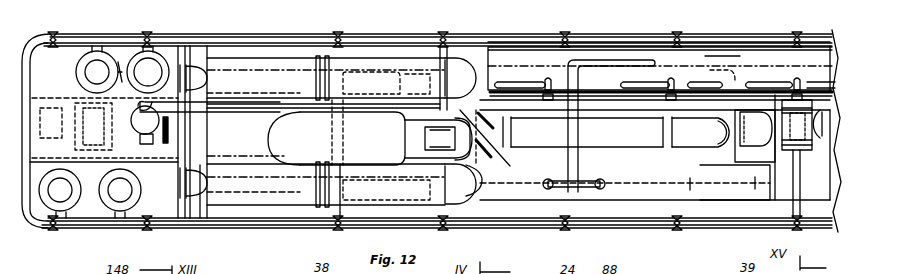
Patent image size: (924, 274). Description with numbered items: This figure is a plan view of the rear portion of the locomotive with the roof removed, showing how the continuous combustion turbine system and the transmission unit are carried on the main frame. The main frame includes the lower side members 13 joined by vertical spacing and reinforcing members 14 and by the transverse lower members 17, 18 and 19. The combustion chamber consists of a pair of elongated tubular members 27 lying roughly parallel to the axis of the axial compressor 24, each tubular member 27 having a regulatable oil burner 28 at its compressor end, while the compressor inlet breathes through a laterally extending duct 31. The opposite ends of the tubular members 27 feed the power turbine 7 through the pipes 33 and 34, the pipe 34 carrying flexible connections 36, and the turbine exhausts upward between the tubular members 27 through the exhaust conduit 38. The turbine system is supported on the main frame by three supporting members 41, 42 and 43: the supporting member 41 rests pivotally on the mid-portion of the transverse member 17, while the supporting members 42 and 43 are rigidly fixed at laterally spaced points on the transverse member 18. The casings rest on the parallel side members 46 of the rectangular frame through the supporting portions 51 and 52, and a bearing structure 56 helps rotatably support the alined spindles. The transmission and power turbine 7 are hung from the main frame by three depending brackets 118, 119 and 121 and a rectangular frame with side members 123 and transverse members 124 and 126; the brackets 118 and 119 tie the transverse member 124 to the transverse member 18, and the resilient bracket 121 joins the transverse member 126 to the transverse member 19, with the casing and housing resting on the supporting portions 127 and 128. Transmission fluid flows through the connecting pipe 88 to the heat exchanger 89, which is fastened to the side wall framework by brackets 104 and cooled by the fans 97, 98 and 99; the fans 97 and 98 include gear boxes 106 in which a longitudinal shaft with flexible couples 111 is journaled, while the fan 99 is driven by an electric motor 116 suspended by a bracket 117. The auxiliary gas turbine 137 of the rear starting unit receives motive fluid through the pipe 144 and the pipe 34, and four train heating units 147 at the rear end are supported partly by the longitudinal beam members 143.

The power turbine 7 is at (694, 165).
The lower side member 13 is at (412, 36).
The spacing and reinforcing member 14 is at (246, 36).
The lower spacing and reinforcing member 17 is at (200, 206).
The lower spacing and reinforcing member 18 is at (446, 200).
The lower spacing and reinforcing member 19 is at (800, 186).
The axial compressor 24 is at (246, 145).
The tubular member 27 is at (256, 62).
The oil burner 28 is at (178, 78).
The duct 31 is at (298, 226).
The pipe 33 is at (485, 140).
The pipe 34 is at (606, 146).
The flexible connection 36 is at (512, 148).
The exhaust conduit 38 is at (305, 134).
The supporting member 41 is at (185, 133).
The supporting member 42 is at (432, 196).
The supporting member 43 is at (460, 62).
The side member 46 is at (422, 62).
The supporting portion 51 is at (372, 70).
The supporting portion 52 is at (292, 70).
The bearing structure 56 is at (422, 138).
The connecting pipe 88 is at (618, 56).
The heat exchanger 89 is at (694, 50).
The fan 97 is at (526, 80).
The fan 98 is at (656, 80).
The fan 99 is at (774, 80).
The bracket 104 is at (494, 46).
The gear box 106 is at (547, 102).
The flexible couple 111 is at (612, 100).
The electric motor 116 is at (812, 114).
The bracket 117 is at (823, 137).
The depending bracket 118 is at (480, 200).
The depending bracket 119 is at (488, 58).
The depending bracket 121 is at (764, 150).
The side member 123 is at (708, 74).
The transverse member 124 is at (480, 176).
The transverse member 126 is at (625, 182).
The supporting portion 127 is at (700, 195).
The supporting portion 128 is at (592, 194).
The auxiliary gas turbine 137 is at (130, 118).
The beam member 143 is at (72, 100).
The pipe 144 is at (292, 108).
The train heating unit 147 is at (76, 72).